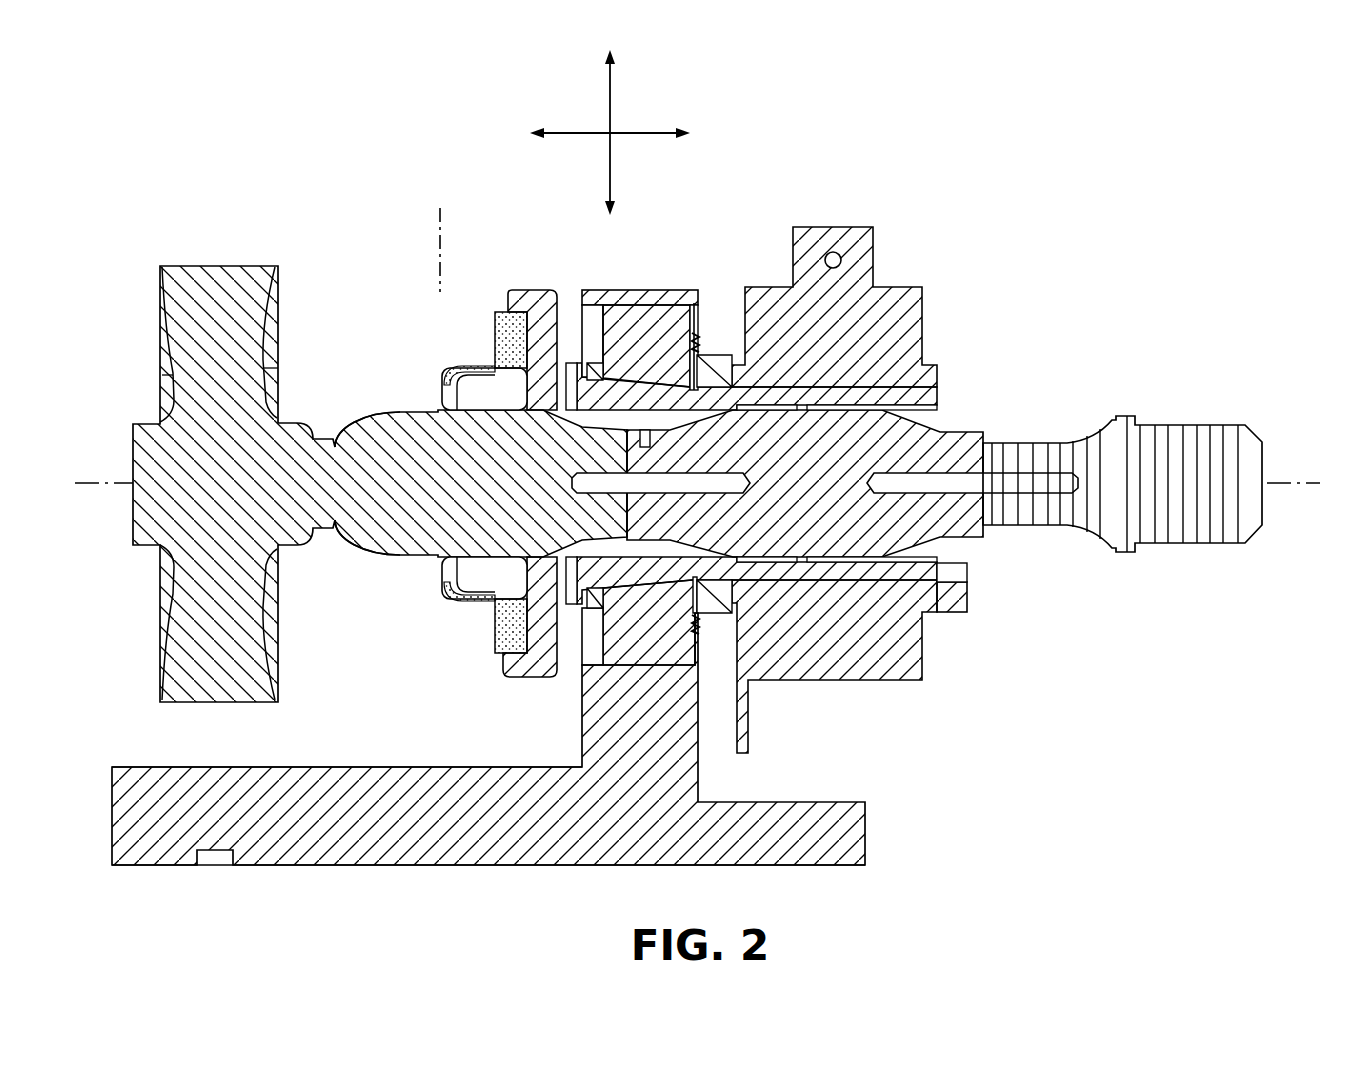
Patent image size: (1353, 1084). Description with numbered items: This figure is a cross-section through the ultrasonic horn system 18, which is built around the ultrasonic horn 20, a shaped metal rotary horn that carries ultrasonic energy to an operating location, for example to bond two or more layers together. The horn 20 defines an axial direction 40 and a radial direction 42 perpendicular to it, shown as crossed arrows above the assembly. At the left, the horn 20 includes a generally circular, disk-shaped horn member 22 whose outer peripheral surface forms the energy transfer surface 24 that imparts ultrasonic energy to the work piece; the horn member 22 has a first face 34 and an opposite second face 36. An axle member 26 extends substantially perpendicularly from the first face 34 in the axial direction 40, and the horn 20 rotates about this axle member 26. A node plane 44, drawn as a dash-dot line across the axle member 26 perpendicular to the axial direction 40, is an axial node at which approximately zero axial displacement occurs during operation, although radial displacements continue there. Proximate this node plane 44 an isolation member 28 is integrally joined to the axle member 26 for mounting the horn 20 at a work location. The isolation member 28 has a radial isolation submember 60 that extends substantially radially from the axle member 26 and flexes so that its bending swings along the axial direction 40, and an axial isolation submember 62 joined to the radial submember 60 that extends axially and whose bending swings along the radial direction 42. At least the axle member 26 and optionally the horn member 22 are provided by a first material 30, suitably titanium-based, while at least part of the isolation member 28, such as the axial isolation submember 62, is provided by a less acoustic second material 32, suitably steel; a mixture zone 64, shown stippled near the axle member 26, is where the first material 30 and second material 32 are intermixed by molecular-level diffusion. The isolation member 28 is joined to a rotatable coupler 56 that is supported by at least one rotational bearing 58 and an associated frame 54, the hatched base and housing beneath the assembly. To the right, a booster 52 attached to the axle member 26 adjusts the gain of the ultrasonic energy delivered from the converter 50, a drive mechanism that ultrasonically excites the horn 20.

The ultrasonic horn system 18 is at (1044, 229).
The ultrasonic horn 20 is at (283, 306).
The horn member 22 is at (197, 696).
The energy transfer surface 24 is at (175, 263).
The axle member 26 is at (340, 440).
The isolation member 28 is at (462, 606).
The first material 30 is at (387, 527).
The second material 32 is at (505, 300).
The first face 34 is at (265, 368).
The second face 36 is at (162, 375).
The axial direction 40 is at (655, 134).
The radial direction 42 is at (612, 73).
The node plane 44 is at (436, 218).
The converter 50 is at (1210, 424).
The booster 52 is at (543, 437).
The frame 54 is at (400, 765).
The rotatable coupler 56 is at (540, 683).
The rotational bearing 58 is at (668, 320).
The radial isolation submember 60 is at (440, 395).
The axial isolation submember 62 is at (468, 367).
The mixture zone 64 is at (448, 372).